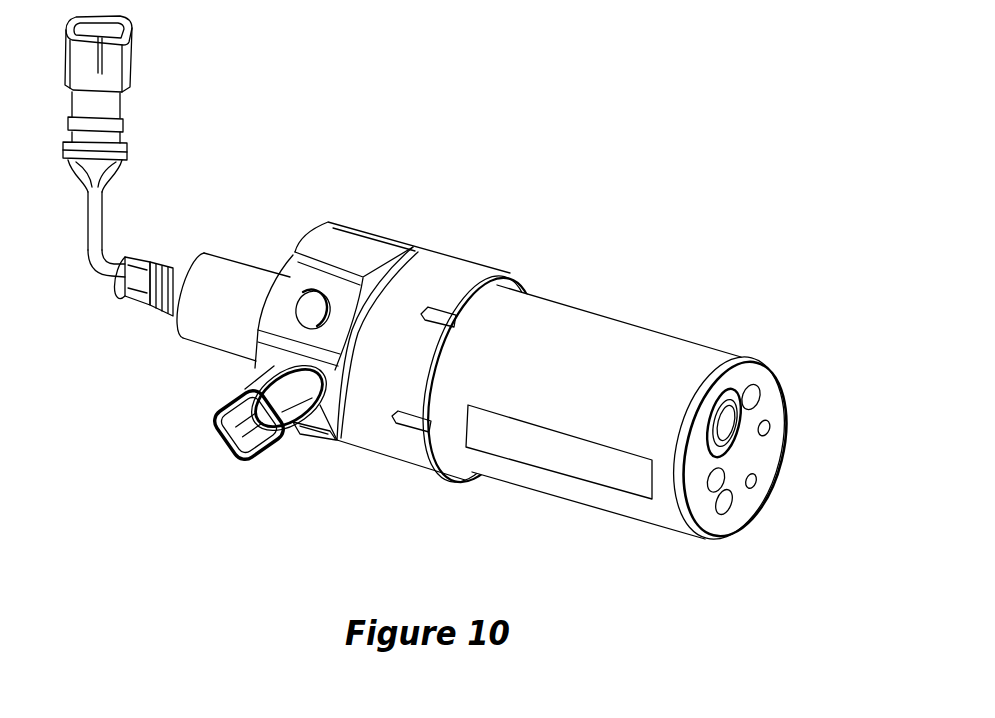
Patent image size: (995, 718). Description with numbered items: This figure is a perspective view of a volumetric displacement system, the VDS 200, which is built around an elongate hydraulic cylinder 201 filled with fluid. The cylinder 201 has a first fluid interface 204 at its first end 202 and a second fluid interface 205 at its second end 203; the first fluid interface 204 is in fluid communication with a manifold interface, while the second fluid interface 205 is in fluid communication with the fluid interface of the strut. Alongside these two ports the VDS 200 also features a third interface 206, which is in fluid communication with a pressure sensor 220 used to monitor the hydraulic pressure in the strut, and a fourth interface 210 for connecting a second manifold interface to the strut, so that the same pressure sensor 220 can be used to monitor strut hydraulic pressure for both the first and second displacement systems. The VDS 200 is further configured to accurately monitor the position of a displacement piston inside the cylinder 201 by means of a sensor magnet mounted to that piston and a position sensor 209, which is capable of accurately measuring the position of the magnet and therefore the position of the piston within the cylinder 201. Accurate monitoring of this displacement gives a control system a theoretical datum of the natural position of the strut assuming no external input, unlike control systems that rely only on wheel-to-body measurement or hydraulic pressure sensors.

The volumetric displacement system 200 is at (571, 182).
The hydraulic cylinder 201 is at (580, 340).
The first end 202 is at (777, 349).
The second end 203 is at (323, 196).
The first fluid interface 204 is at (718, 424).
The second fluid interface 205 is at (308, 303).
The third interface 206 is at (336, 412).
The position sensor 209 is at (206, 320).
The fourth interface 210 is at (319, 441).
The pressure sensor 220 is at (224, 452).